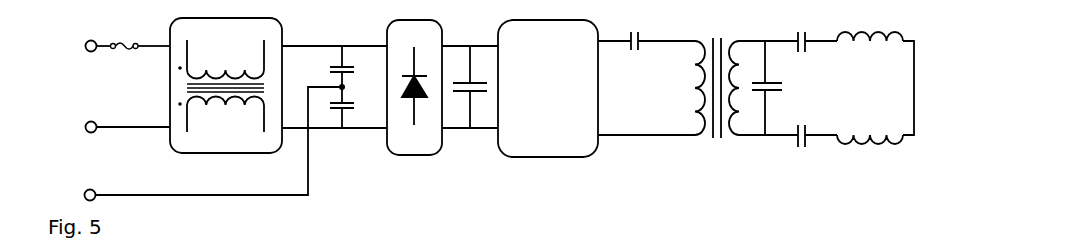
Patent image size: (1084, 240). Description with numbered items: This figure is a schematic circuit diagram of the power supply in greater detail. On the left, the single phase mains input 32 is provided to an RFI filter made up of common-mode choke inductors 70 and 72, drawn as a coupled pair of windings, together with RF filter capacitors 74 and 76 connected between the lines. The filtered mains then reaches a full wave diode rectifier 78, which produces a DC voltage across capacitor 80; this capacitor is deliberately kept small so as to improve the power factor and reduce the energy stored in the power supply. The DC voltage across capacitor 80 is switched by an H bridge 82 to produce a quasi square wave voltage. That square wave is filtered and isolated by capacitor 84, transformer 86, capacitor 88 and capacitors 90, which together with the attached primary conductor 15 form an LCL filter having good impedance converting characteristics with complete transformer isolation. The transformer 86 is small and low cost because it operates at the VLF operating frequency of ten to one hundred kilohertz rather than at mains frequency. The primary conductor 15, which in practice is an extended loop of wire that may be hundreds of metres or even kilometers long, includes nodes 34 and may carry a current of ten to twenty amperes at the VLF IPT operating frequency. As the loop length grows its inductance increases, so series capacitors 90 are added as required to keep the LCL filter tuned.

The single phase mains input 32 is at (196, 122).
The common-mode choke inductor 70 is at (221, 59).
The common-mode choke inductor 72 is at (221, 114).
The RF filter capacitor 74 is at (353, 66).
The RF filter capacitor 76 is at (353, 107).
The full wave diode rectifier 78 is at (414, 87).
The capacitor 80 is at (472, 87).
The H bridge 82 is at (548, 88).
The capacitor 84 is at (646, 31).
The transformer 86 is at (717, 78).
The capacitor 88 is at (772, 88).
The capacitor 90 is at (817, 99).
The node 34 is at (870, 80).
The primary conductor 15 is at (918, 77).